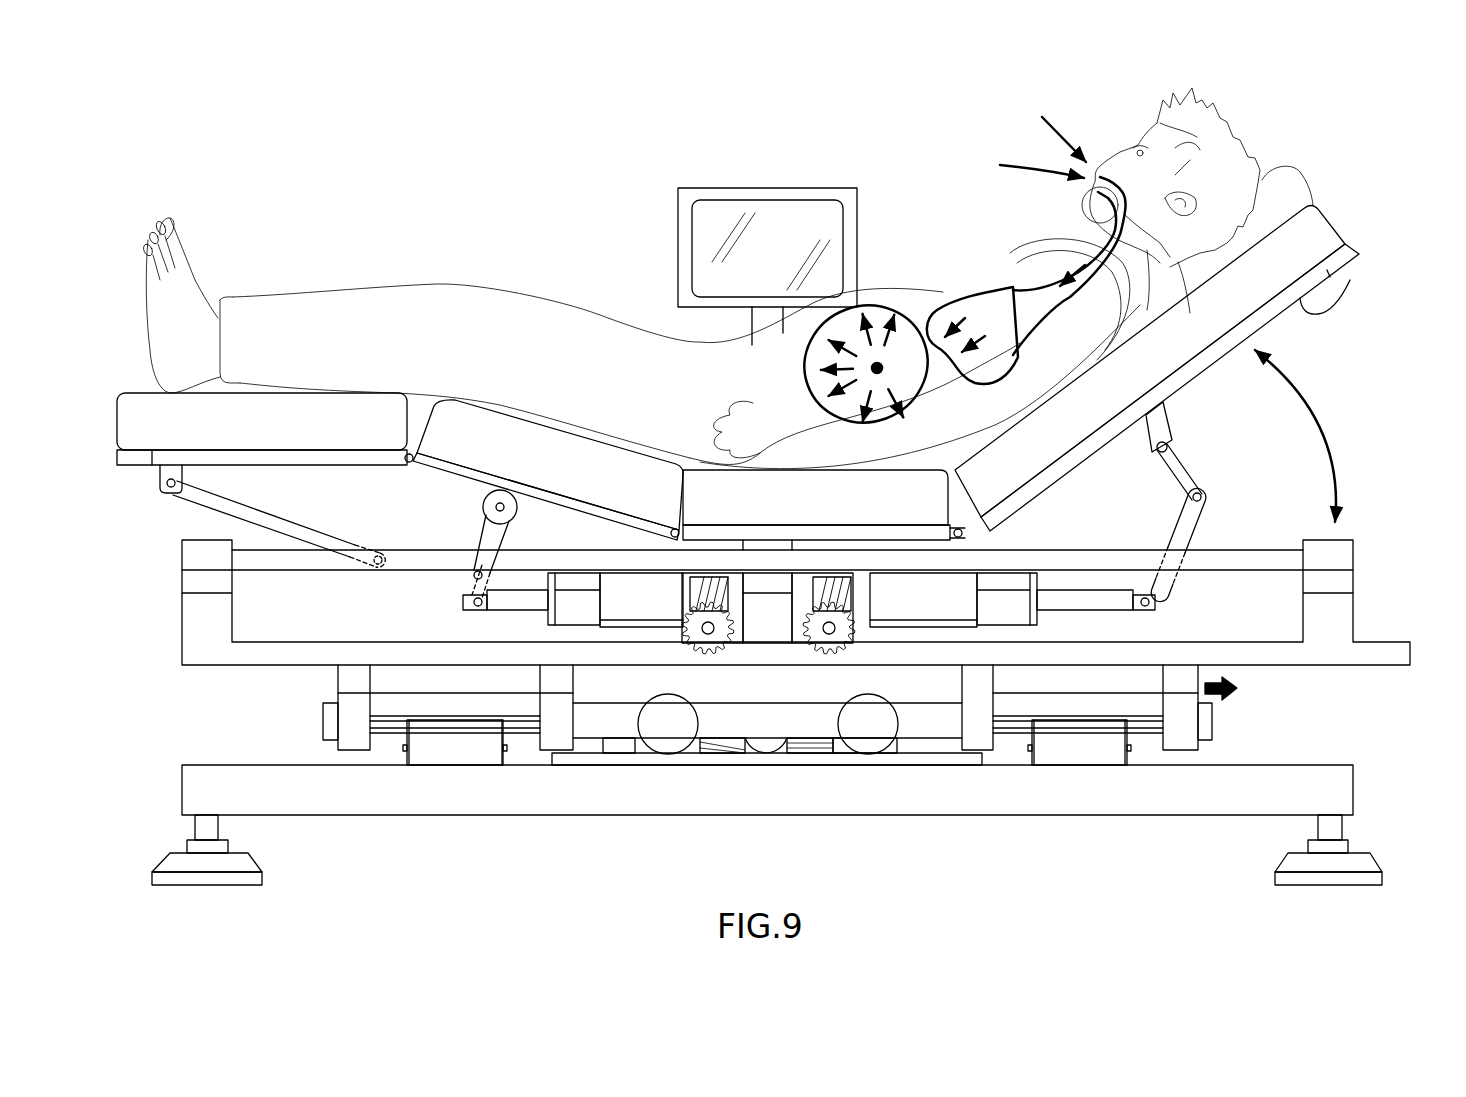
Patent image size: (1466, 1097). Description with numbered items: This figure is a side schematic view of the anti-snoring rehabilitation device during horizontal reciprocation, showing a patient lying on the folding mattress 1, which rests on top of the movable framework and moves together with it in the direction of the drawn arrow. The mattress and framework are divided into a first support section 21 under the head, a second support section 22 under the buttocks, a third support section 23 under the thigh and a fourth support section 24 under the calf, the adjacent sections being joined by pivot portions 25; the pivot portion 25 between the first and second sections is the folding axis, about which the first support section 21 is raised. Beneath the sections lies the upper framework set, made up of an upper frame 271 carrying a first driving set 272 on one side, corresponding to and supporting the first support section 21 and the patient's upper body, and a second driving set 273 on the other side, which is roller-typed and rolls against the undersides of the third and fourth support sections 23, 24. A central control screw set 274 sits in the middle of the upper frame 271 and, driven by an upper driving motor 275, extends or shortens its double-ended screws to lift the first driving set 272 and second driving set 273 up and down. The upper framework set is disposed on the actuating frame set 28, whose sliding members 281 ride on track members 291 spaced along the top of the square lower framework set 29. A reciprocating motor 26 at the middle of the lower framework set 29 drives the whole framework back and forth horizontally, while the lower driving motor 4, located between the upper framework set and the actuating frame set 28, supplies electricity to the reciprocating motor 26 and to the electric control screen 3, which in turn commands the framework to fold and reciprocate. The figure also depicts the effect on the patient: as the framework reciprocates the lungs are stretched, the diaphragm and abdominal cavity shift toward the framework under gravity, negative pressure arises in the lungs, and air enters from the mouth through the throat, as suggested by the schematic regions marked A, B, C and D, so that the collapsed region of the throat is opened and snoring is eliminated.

The folding mattress 1 is at (1346, 204).
The first support section 21 is at (1300, 297).
The second support section 22 is at (713, 535).
The third support section 23 is at (588, 512).
The fourth support section 24 is at (330, 457).
The pivot portion 25 is at (407, 473).
The reciprocating motor 26 is at (868, 754).
The upper frame 271 is at (1248, 560).
The first driving set 272 is at (1185, 594).
The second driving set 273 is at (456, 607).
The central control screw set 274 is at (612, 605).
The upper driving motor 275 is at (735, 630).
The actuating frame set 28 is at (1180, 745).
The sliding member 281 is at (1145, 730).
The lower framework set 29 is at (1342, 792).
The track member 291 is at (1080, 746).
The electric control screen 3 is at (775, 186).
The lower driving motor 4 is at (668, 754).
The airflow A is at (1092, 170).
The breathing tube B is at (1093, 237).
The lung region C is at (943, 303).
The abdomen region D is at (880, 303).